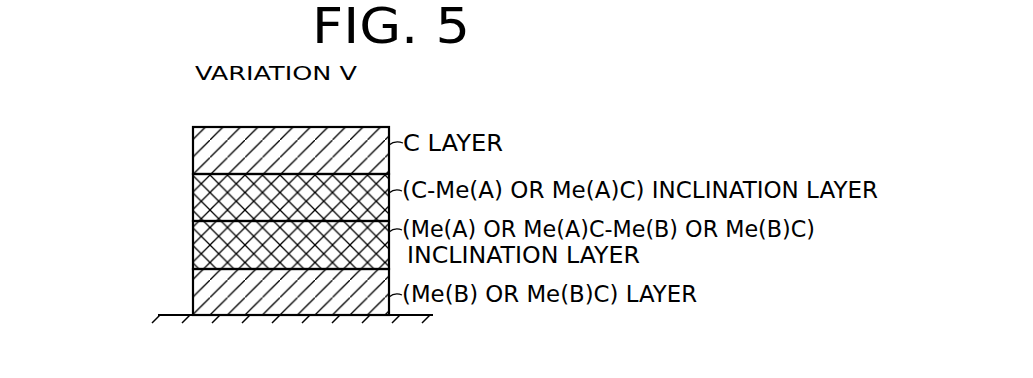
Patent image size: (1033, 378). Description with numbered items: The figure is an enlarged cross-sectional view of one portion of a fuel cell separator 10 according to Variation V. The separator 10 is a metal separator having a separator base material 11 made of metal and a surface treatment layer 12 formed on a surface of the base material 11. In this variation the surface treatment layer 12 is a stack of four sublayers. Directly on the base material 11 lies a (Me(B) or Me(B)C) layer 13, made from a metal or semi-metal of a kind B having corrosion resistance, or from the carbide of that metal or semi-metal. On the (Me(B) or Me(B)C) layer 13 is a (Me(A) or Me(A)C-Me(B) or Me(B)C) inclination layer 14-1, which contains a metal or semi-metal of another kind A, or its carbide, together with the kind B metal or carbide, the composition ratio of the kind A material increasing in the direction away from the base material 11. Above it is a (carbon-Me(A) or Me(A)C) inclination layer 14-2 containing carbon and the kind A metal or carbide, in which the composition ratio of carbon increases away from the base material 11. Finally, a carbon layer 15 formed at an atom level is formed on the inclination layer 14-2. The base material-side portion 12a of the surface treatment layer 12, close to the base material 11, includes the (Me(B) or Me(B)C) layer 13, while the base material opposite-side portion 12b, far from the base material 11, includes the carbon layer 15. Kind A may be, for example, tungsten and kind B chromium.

The separator 10 is at (52, 147).
The separator base material 11 is at (163, 321).
The surface treatment layer 12 is at (118, 147).
The base material-side portion 12a is at (357, 300).
The base material opposite-side portion 12b is at (370, 133).
The (Me(B) or Me(B)C) layer 13 is at (193, 292).
The (Me(A) or Me(A)C-Me(B) or Me(B)C) inclination layer 14-1 is at (193, 246).
The (carbon-Me(A) or Me(A)C) inclination layer 14-2 is at (193, 195).
The carbon layer 15 is at (193, 149).